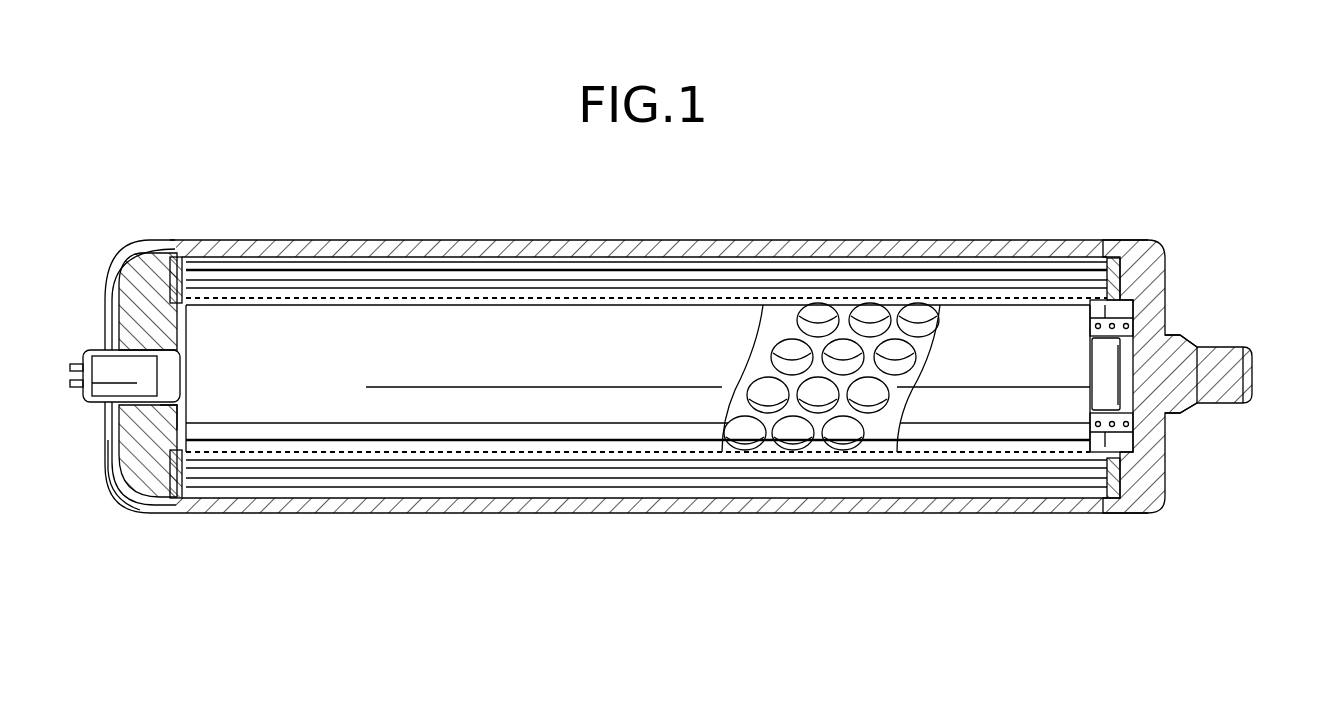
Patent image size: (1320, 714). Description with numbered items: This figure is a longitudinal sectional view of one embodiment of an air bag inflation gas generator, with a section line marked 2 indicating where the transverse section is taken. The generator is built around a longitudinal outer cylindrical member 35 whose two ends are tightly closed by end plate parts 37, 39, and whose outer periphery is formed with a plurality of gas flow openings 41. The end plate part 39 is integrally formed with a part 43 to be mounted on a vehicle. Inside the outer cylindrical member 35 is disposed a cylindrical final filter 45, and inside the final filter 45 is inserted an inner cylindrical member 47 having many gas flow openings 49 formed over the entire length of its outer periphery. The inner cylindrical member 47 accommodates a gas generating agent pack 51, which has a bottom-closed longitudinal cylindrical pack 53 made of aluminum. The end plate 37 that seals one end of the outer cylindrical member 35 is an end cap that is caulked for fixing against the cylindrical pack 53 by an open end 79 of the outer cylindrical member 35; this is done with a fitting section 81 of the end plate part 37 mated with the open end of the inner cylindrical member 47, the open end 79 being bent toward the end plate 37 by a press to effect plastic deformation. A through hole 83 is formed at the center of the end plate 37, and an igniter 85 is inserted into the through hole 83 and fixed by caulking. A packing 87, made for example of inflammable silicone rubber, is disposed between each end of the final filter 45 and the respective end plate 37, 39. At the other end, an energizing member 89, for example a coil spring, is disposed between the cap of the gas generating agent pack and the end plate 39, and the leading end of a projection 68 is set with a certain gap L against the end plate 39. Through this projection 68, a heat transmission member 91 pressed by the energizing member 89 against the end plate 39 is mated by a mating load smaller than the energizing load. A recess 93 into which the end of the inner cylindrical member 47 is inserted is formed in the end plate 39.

The outer cylindrical member 35 is at (355, 246).
The end plate part 37 is at (143, 272).
The end plate part 39 is at (1193, 410).
The gas flow openings 41 is at (445, 244).
The part to be mounted on a vehicle 43 is at (1238, 368).
The final filter 45 is at (397, 271).
The inner cylindrical member 47 is at (242, 296).
The gas flow openings 49 is at (746, 436).
The gas generating agent pack 51 is at (368, 408).
The cylindrical pack 53 is at (615, 413).
The projection 68 is at (1107, 392).
The open end 79 is at (112, 451).
The fitting section 81 is at (174, 409).
The through hole 83 is at (102, 347).
The igniter 85 is at (168, 357).
The packing 87 is at (1113, 266).
The energizing member 89 is at (1158, 264).
The heat transmission member 91 is at (1148, 306).
The recess 93 is at (1137, 447).
The gap L is at (1197, 347).
The section line 2- 2 is at (870, 212).